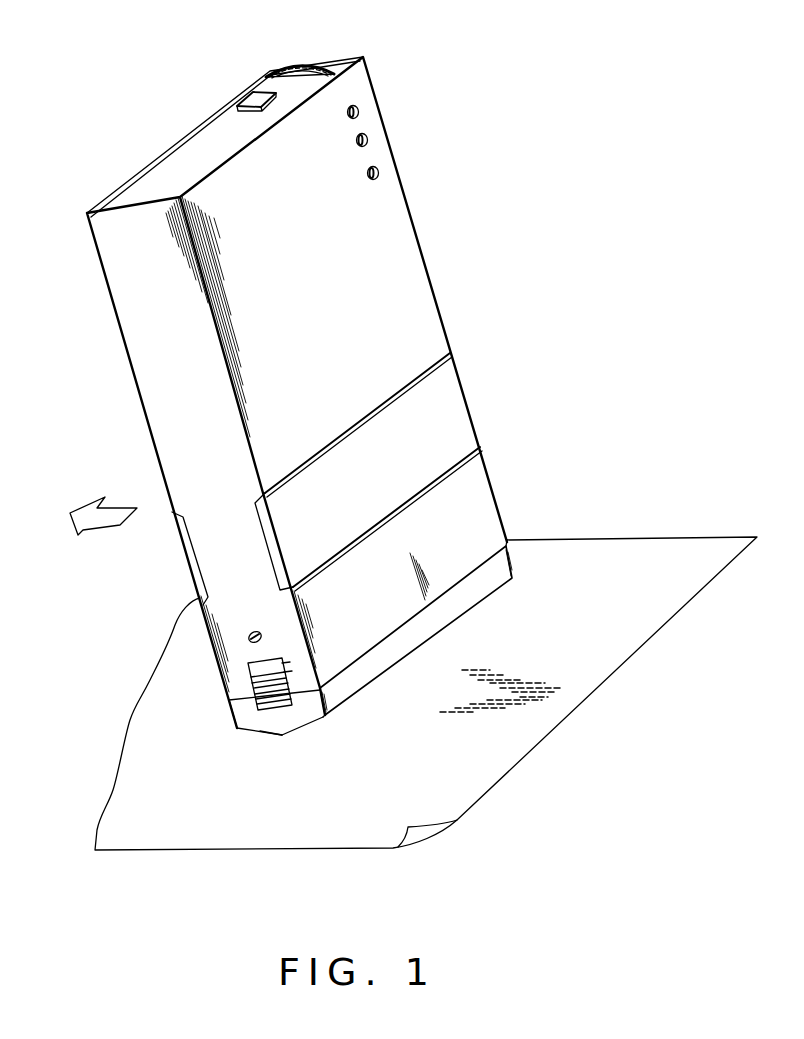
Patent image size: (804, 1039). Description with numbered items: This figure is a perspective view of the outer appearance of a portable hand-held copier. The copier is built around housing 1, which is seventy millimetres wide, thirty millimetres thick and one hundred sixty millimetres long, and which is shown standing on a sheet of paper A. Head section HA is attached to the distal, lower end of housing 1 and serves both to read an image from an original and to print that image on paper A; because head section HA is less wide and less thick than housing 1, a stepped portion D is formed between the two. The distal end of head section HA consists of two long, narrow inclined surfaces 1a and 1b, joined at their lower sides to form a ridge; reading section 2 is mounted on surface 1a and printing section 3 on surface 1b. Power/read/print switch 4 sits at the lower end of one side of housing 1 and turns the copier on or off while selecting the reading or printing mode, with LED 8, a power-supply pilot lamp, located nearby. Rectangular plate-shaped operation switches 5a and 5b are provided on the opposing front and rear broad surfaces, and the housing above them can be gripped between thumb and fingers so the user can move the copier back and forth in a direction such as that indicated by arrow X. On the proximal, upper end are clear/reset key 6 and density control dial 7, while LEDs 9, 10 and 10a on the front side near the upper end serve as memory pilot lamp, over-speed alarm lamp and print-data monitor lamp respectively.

The housing 1 is at (397, 242).
The inclined surface 1a is at (324, 720).
The inclined surface 1b is at (252, 735).
The reading section 2 is at (305, 731).
The printing section 3 is at (270, 736).
The power/read/print switch 4 is at (248, 688).
The operation switch 5a is at (458, 400).
The operation switch 5b is at (185, 565).
The clear/reset key 6 is at (252, 90).
The density control dial 7 is at (299, 62).
The LED 8 is at (248, 638).
The LED 9 is at (359, 112).
The LED 10 is at (369, 140).
The LED 10a is at (380, 173).
The stepped portion D is at (512, 545).
The head section HA is at (460, 608).
The paper A is at (327, 849).
The direction arrow X is at (90, 516).